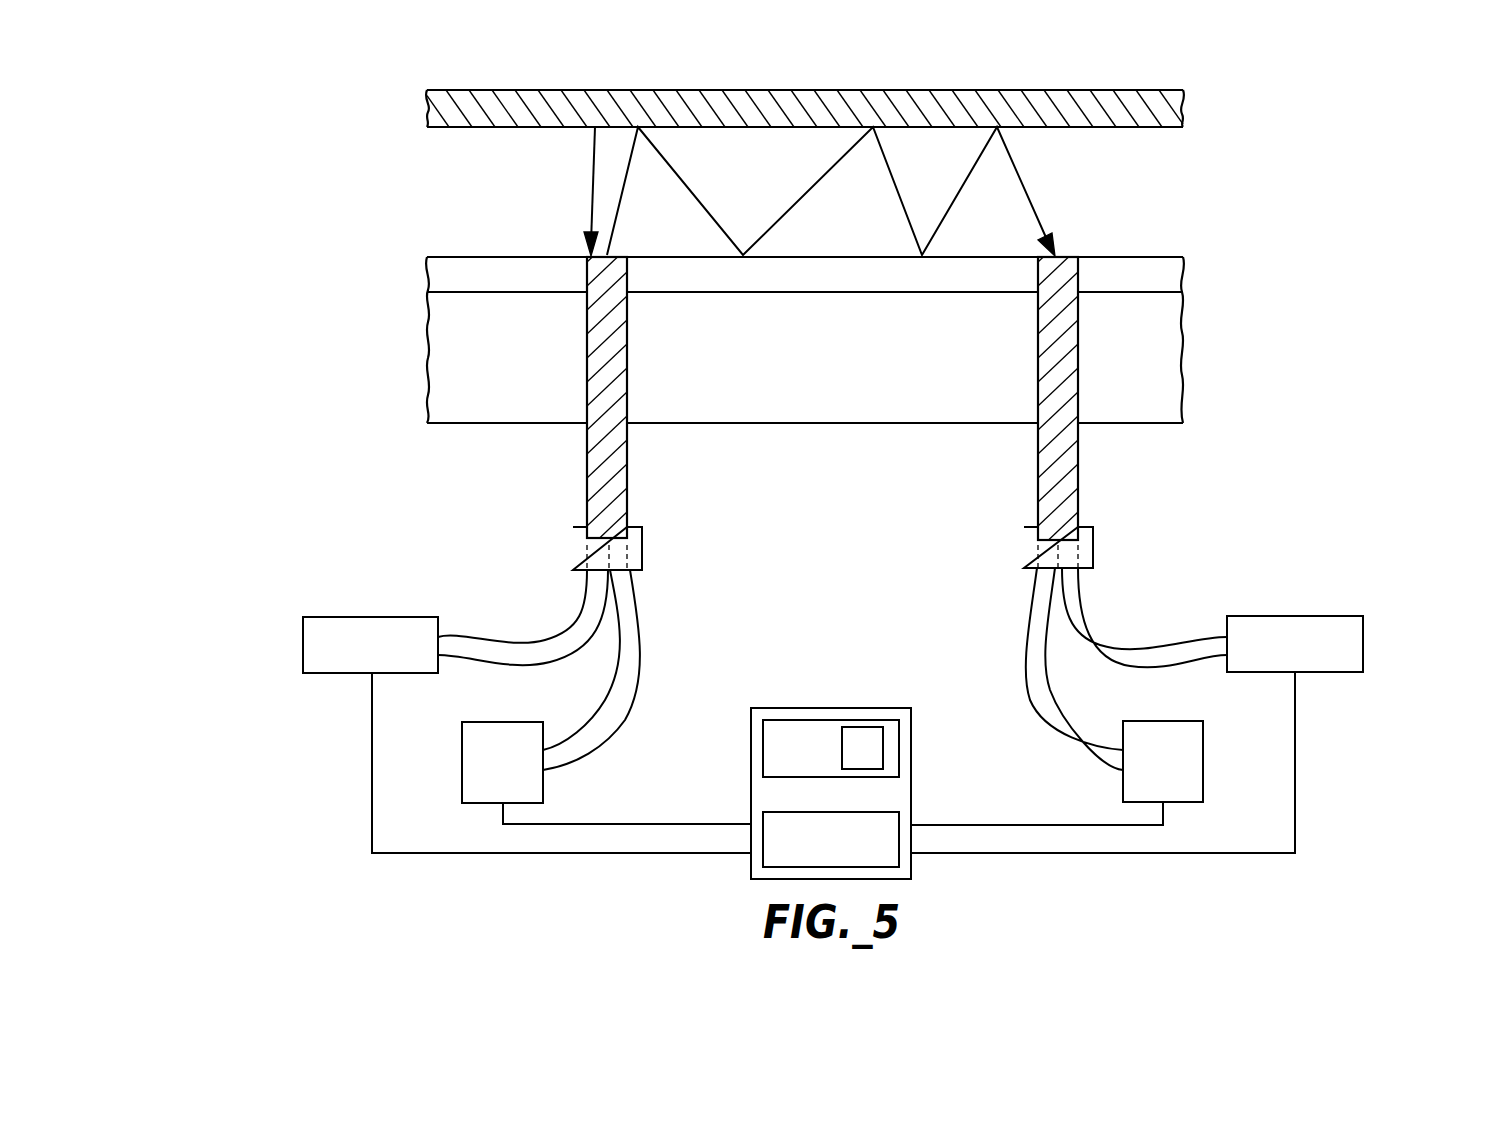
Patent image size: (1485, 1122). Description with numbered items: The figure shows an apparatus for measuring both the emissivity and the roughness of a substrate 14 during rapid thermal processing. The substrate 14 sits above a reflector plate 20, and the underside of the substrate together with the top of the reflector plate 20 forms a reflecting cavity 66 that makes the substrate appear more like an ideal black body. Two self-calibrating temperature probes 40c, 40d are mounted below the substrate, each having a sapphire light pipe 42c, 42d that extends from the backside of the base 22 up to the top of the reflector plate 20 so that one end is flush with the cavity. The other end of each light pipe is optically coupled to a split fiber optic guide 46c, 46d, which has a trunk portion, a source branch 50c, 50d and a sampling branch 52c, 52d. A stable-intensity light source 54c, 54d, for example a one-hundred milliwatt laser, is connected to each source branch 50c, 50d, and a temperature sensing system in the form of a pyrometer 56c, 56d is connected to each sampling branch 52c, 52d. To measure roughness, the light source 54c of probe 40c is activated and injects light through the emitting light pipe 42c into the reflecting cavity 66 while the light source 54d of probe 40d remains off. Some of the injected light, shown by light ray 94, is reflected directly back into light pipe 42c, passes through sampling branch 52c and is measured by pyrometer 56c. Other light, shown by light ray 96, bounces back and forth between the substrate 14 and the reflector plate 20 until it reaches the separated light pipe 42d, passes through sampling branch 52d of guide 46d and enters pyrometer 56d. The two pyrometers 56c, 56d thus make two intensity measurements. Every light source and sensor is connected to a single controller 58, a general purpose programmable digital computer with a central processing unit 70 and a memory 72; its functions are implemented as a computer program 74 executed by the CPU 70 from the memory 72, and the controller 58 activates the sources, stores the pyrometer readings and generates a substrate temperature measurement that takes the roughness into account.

The substrate 14 is at (1153, 118).
The reflector plate 20 is at (1140, 268).
The base 22 is at (1170, 340).
The reflecting cavity 66 is at (1136, 202).
The light ray 94 is at (590, 172).
The light ray 96 is at (815, 185).
The emitting light pipe 42c is at (593, 472).
The light pipe 42d is at (1070, 463).
The split fiber optic guide 46c is at (643, 608).
The split fiber optic guide 46d is at (1020, 665).
The source branch 50c is at (538, 655).
The source branch 50d is at (1125, 652).
The sampling branch 52c is at (637, 695).
The sampling branch 52d is at (1050, 725).
The light source 54c is at (408, 623).
The light source 54d is at (1290, 622).
The pyrometer 56c is at (475, 770).
The pyrometer 56d is at (1195, 775).
The controller 58 is at (772, 706).
The central processing unit 70 is at (900, 858).
The memory 72 is at (900, 762).
The computer program 74 is at (852, 726).
The self-calibrating temperature probe 40c is at (272, 754).
The self-calibrating temperature probe 40d is at (1358, 742).